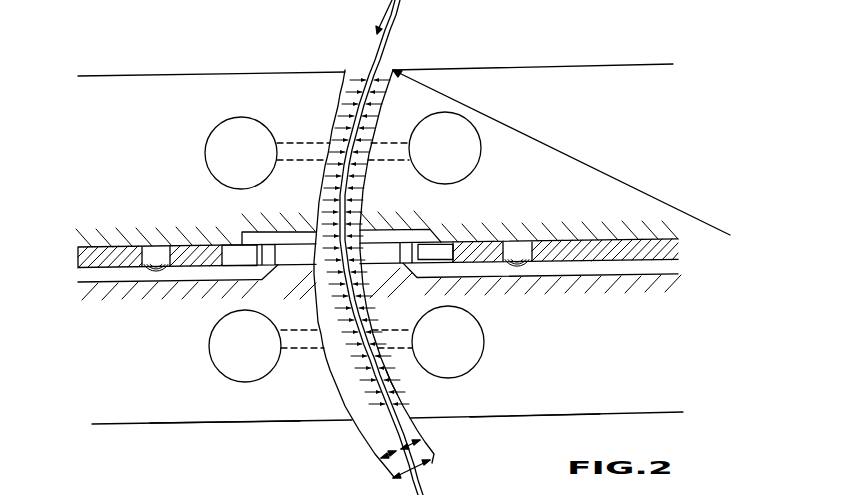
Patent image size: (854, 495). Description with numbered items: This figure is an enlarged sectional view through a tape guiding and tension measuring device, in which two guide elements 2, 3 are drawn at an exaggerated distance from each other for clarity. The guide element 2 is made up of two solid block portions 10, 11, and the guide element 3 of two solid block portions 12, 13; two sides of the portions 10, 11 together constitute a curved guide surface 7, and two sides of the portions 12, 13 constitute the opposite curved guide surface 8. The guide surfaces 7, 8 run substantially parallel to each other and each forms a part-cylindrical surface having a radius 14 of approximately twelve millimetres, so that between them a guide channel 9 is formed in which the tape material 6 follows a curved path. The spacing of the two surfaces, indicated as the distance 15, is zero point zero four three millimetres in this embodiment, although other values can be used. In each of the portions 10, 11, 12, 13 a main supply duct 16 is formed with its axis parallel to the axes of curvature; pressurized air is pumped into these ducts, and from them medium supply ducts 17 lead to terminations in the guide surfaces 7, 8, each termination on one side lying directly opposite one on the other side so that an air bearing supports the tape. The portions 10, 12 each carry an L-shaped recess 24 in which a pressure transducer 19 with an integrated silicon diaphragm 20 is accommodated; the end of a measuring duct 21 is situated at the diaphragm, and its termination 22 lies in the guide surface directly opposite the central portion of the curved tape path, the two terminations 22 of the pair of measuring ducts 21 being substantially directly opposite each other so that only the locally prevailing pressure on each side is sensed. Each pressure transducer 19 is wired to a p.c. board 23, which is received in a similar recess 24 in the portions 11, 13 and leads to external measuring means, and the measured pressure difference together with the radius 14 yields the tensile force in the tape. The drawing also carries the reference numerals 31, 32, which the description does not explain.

The guide element 2 is at (526, 415).
The guide element 3 is at (232, 422).
The tape material 6 is at (396, 22).
The guide surface 7 is at (362, 192).
The guide surface 8 is at (315, 194).
The guide channel 9 is at (386, 384).
The portion 10 is at (512, 75).
The portion 11 is at (620, 398).
The portion 12 is at (233, 80).
The portion 13 is at (157, 412).
The radius 14 is at (502, 122).
The distance between the guide surfaces 15 is at (392, 478).
The main supply duct 16 is at (223, 135).
The medium supply duct 17 is at (293, 147).
The pressure transducer 19 is at (193, 255).
The integrated silicon diaphragm 20 is at (218, 246).
The measuring duct 21 is at (232, 255).
The termination 22 is at (305, 231).
The p.c. board 23 is at (104, 253).
The L-shaped recess 24 is at (107, 273).
The right air gap 31 is at (417, 443).
The left air gap 32 is at (380, 458).